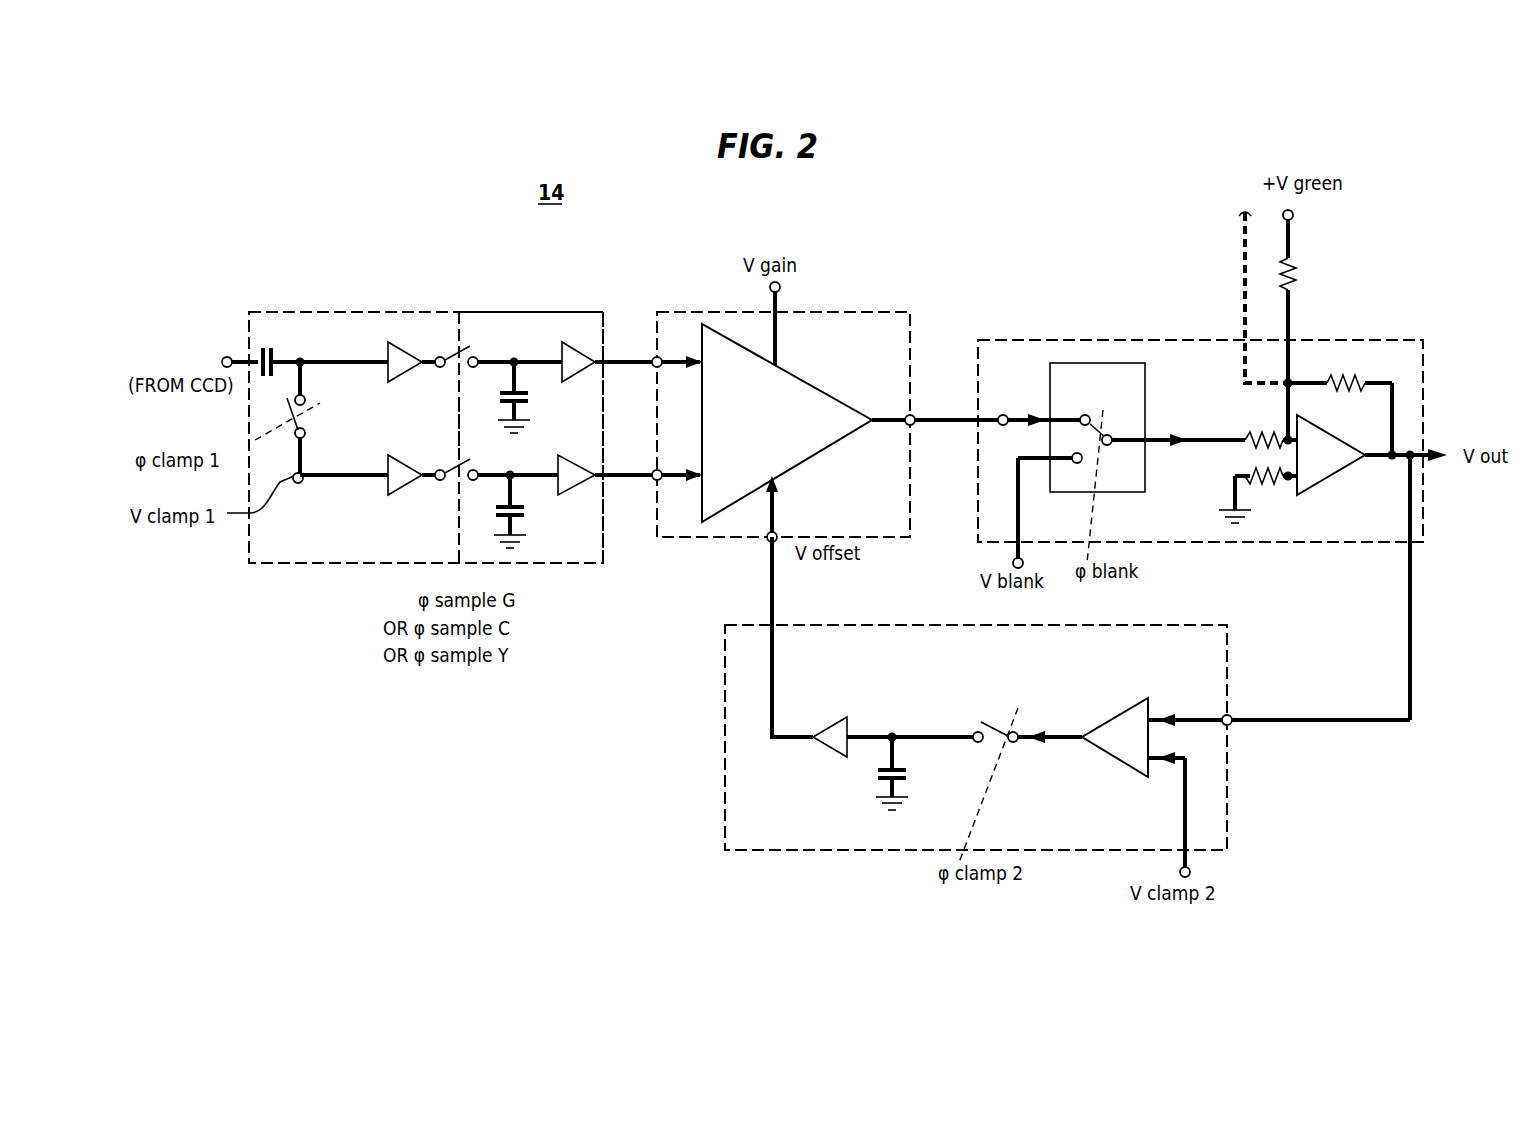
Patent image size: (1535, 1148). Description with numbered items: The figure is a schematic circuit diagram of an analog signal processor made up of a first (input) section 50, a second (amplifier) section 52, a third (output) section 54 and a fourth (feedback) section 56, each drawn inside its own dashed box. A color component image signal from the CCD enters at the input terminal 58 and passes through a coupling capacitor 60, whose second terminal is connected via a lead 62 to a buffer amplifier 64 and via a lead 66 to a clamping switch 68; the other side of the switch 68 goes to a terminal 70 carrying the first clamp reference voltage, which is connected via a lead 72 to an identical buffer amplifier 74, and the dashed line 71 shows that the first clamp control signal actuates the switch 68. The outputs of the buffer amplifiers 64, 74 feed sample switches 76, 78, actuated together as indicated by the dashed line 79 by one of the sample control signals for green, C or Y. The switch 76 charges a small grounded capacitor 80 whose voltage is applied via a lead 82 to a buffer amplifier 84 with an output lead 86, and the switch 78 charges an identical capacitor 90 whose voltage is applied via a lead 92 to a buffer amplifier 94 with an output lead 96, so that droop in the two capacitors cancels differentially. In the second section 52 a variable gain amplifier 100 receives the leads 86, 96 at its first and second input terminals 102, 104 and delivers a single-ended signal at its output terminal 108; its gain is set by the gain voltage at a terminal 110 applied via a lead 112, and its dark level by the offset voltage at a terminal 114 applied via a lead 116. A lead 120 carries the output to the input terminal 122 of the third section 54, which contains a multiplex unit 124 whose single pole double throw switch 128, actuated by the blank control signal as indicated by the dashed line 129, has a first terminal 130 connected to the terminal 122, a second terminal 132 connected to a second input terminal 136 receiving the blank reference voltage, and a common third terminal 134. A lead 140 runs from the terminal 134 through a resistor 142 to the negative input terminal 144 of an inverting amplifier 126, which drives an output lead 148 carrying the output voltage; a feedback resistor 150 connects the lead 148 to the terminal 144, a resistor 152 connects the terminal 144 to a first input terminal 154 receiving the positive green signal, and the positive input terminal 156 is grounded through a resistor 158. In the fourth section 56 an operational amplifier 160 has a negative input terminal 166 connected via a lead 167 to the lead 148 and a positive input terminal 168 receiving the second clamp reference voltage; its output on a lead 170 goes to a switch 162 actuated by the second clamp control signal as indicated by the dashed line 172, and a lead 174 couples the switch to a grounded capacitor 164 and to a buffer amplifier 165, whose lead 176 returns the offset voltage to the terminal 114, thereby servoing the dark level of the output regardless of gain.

The first (input) section 50 is at (300, 312).
The second (amplifier) section 52 is at (910, 312).
The third (output) section 54 is at (1150, 340).
The fourth (feedback) section 56 is at (1227, 672).
The input terminal 58 is at (227, 355).
The coupling capacitor 60 is at (270, 345).
The lead 62 is at (360, 362).
The buffer amplifier 64 is at (402, 350).
The lead 66 is at (306, 380).
The clamping switch 68 is at (320, 451).
The terminal 70 is at (298, 485).
The dashed line 71 is at (312, 406).
The lead 72 is at (355, 477).
The buffer amplifier 74 is at (402, 465).
The switch 76 is at (458, 347).
The switch 78 is at (476, 465).
The dashed line 79 is at (448, 410).
The capacitor 80 is at (530, 400).
The lead 82 is at (535, 360).
The buffer amplifier 84 is at (578, 345).
The lead 86 is at (612, 360).
The capacitor 90 is at (526, 520).
The lead 92 is at (535, 474).
The buffer amplifier 94 is at (585, 470).
The lead 96 is at (612, 480).
The variable gain amplifier 100 is at (842, 404).
The first input terminal 102 is at (660, 356).
The second input terminal 104 is at (660, 481).
The output terminal 108 is at (915, 415).
The terminal 110 is at (781, 287).
The lead 112 is at (780, 330).
The terminal 114 is at (777, 543).
The lead 116 is at (768, 512).
The lead 120 is at (945, 425).
The input terminal 122 is at (1003, 414).
The multiplex (MUX) unit 124 is at (1075, 363).
The inverting amplifier 126 is at (1335, 478).
The single pole double throw switch 128 is at (1112, 432).
The dashed line 129 is at (1100, 465).
The first terminal 130 is at (1080, 416).
The second terminal 132 is at (1072, 456).
The common third terminal 134 is at (1113, 437).
The second input terminal 136 is at (1012, 563).
The lead 140 is at (1193, 436).
The resistor 142 is at (1245, 445).
The negative input terminal 144 is at (1284, 436).
The output lead 148 is at (1437, 448).
The feedback resistor 150 is at (1345, 378).
The resistor 152 is at (1296, 268).
The first input terminal 154 is at (1294, 215).
The positive input terminal 156 is at (1298, 485).
The resistor 158 is at (1268, 482).
The operational amplifier 160 is at (1107, 722).
The switch 162 is at (975, 745).
The capacitor 164 is at (882, 778).
The buffer amplifier 165 is at (828, 752).
The negative input terminal 166 is at (1222, 715).
The lead 167 is at (1408, 700).
The positive input terminal 168 is at (1191, 870).
The lead 170 is at (1052, 742).
The dashed line 172 is at (1010, 718).
The lead 174 is at (925, 735).
The lead 176 is at (776, 690).